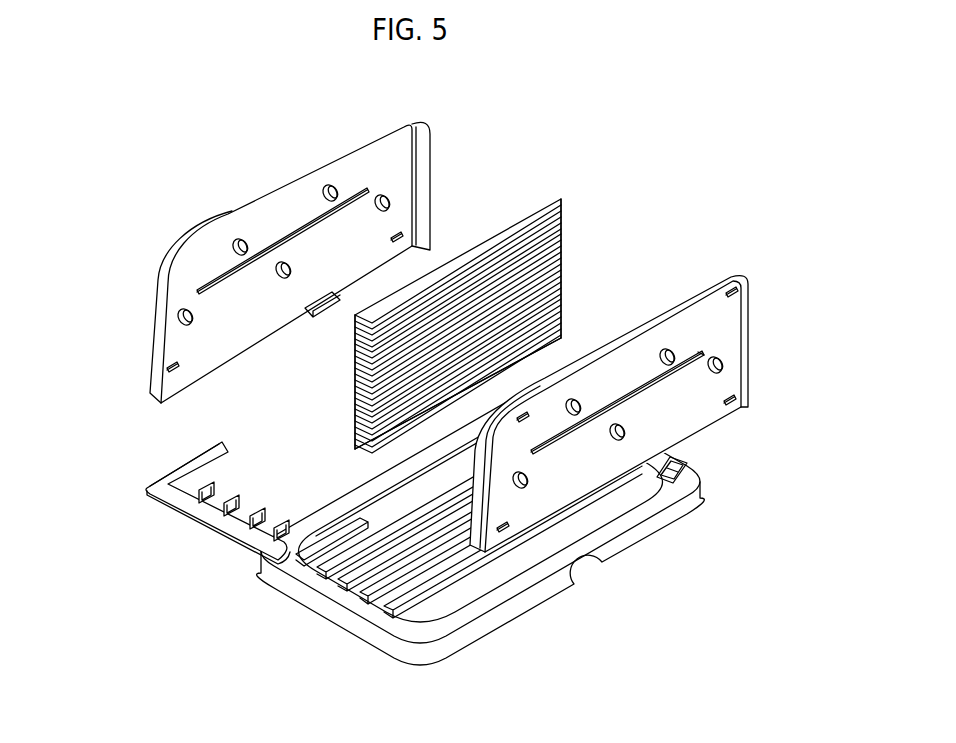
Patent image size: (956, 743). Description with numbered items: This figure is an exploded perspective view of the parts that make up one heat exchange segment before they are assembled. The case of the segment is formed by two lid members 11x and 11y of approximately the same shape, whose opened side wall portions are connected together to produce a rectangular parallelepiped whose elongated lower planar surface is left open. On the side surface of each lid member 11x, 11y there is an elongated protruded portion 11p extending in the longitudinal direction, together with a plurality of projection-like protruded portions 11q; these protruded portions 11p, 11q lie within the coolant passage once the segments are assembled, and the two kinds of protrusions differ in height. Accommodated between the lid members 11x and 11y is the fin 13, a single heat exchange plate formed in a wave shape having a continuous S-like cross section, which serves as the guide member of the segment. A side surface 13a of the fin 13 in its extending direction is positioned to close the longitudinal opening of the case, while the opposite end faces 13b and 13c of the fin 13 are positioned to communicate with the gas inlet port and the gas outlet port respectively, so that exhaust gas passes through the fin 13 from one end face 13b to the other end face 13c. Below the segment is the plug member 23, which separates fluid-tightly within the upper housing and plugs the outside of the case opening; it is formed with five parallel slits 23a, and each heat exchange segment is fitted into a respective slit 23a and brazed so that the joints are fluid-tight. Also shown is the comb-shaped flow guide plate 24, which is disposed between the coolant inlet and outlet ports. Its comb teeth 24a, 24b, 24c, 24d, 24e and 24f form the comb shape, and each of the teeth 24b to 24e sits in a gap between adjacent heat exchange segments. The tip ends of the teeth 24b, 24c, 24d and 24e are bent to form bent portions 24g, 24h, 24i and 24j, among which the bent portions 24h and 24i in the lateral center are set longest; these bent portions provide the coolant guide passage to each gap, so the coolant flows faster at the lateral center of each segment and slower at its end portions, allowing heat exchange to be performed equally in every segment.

The lid member 11x is at (430, 135).
The lid member 11y is at (644, 395).
The protruded portion 11p is at (704, 352).
The protruded portion 11q is at (722, 366).
The fin 13 is at (466, 315).
The side surface 13a is at (550, 345).
The end face 13b is at (355, 341).
The end face 13c is at (568, 232).
The plug member 23 is at (514, 528).
The slit 23a is at (670, 467).
The flow guide plate 24 is at (211, 493).
The comb tooth 24a is at (340, 518).
The comb tooth 24b is at (277, 525).
The comb tooth 24c is at (250, 517).
The comb tooth 24d is at (230, 503).
The comb tooth 24e is at (212, 490).
The comb tooth 24f is at (190, 460).
The bent portion 24g is at (278, 536).
The bent portion 24h is at (255, 520).
The bent portion 24i is at (228, 510).
The bent portion 24j is at (203, 494).